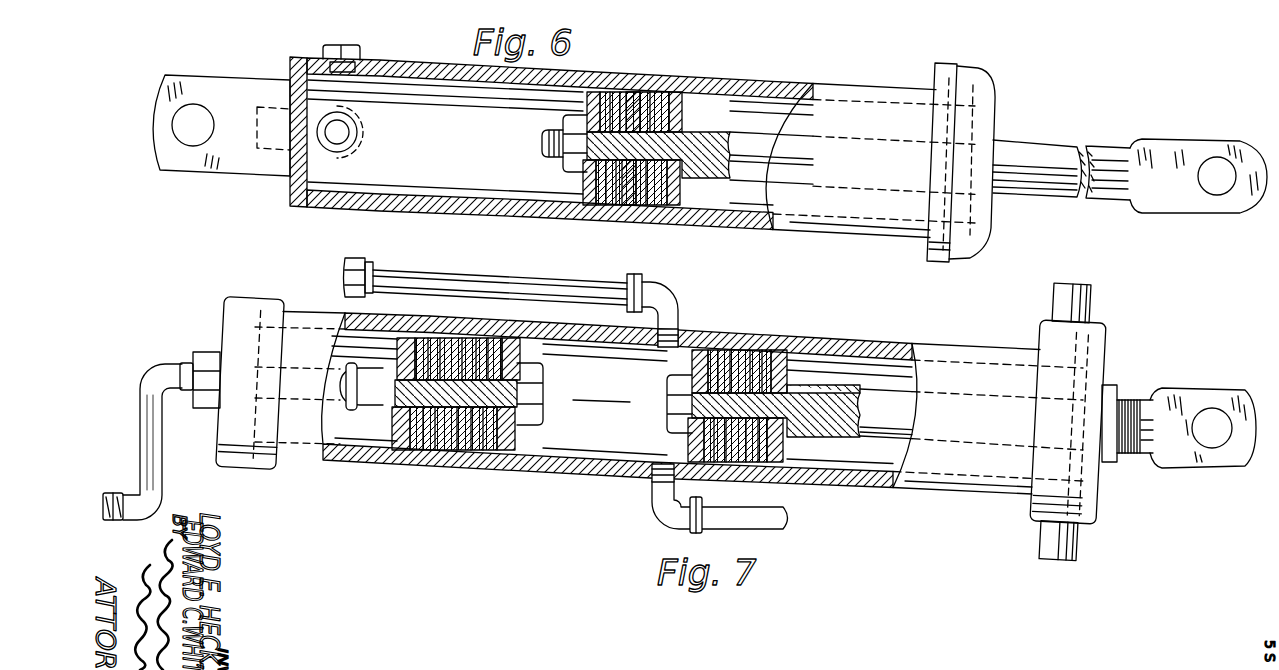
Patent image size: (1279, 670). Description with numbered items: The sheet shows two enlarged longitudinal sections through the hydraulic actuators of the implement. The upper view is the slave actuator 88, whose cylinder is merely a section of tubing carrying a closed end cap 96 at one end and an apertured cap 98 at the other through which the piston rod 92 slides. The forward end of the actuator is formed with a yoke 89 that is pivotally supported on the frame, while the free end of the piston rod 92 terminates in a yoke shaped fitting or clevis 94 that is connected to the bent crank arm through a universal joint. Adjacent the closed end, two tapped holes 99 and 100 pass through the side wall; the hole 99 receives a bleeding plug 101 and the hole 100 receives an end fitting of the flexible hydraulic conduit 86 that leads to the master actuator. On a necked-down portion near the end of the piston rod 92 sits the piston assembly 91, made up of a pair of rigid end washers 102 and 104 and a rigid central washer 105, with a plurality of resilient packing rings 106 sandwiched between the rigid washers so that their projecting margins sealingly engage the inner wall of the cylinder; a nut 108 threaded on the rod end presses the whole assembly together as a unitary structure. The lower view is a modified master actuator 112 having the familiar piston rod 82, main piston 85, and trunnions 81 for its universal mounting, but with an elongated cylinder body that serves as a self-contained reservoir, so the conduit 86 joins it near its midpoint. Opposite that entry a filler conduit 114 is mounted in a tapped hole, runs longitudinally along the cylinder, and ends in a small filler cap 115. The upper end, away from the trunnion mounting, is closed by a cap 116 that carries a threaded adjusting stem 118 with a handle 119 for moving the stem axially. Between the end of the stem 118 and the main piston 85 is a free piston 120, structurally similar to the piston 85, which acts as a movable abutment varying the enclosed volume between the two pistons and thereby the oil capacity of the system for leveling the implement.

In FIG. 7, the trunnions 81 is at (1088, 298).
In FIG. 7, the piston rod 82 is at (1133, 398).
In FIG. 7, the piston 85 is at (676, 446).
In FIG. 7, the flexible hydraulic conduit 86 is at (763, 532).
In FIG. 6, the slave actuator 88 is at (737, 223).
In FIG. 6, the yoke 89 is at (200, 163).
In FIG. 6, the piston assembly 91 is at (550, 120).
In FIG. 6, the piston rod 92 is at (1018, 152).
In FIG. 6, the clevis 94 is at (1178, 148).
In FIG. 6, the closed end cap 96 is at (292, 92).
In FIG. 6, the apertured cap 98 is at (943, 73).
In FIG. 6, the tapped hole 99 is at (343, 76).
In FIG. 6, the tapped hole 100 is at (358, 139).
In FIG. 6, the bleeding plug 101 is at (358, 46).
In FIG. 6, the rigid end washer 102 is at (587, 183).
In FIG. 6, the rigid end washer 104 is at (678, 193).
In FIG. 6, the rigid central washer 105 is at (630, 206).
In FIG. 6, the packing rings 106 is at (610, 205).
In FIG. 6, the nut 108 is at (565, 165).
In FIG. 7, the modified master actuator 112 is at (868, 489).
In FIG. 7, the filler conduit 114 is at (497, 288).
In FIG. 7, the filler cap 115 is at (365, 293).
In FIG. 7, the cap 116 is at (245, 305).
In FIG. 7, the threaded adjusting stem 118 is at (168, 367).
In FIG. 7, the handle 119 is at (110, 495).
In FIG. 7, the free piston 120 is at (529, 443).